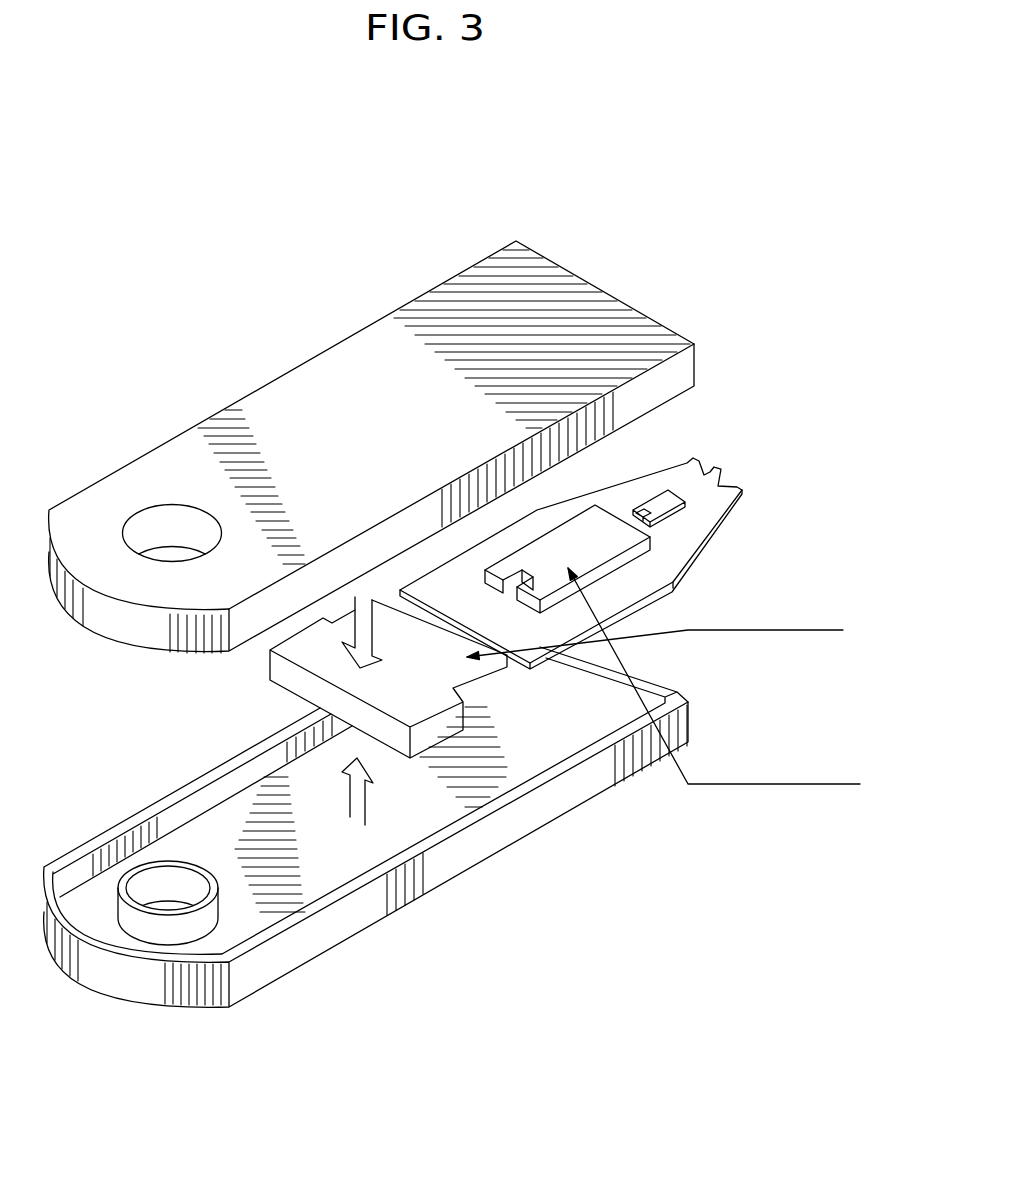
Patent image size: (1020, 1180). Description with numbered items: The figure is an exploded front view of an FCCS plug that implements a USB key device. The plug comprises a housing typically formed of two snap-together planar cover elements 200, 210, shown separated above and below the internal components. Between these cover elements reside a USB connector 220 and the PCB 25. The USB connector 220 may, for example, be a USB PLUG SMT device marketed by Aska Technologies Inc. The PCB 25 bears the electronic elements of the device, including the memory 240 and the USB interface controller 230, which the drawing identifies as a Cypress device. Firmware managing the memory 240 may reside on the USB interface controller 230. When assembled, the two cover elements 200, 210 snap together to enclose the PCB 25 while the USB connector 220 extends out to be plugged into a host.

The PCB 25 is at (784, 458).
The planar cover element 200 is at (385, 885).
The planar cover element 210 is at (316, 378).
The USB connector 220 is at (427, 627).
The USB interface controller 230 is at (676, 540).
The memory 240 is at (662, 503).